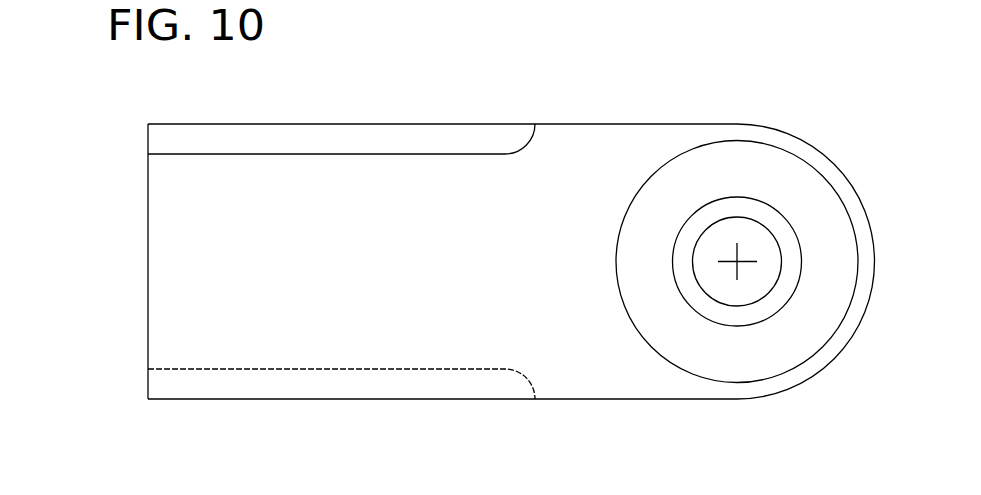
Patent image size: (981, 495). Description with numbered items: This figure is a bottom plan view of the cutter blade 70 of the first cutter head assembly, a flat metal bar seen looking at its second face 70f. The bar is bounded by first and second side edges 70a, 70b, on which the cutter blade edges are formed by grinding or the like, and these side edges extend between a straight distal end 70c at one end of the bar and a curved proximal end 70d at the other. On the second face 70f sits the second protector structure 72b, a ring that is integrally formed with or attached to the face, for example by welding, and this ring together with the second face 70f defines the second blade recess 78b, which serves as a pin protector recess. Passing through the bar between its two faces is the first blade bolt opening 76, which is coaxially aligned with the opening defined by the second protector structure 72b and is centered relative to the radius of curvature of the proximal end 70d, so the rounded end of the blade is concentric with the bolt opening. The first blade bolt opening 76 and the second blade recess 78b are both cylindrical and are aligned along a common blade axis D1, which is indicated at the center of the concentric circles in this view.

The cutter blade 70 is at (510, 255).
The first side edge 70a is at (584, 123).
The second side edge 70b is at (595, 399).
The straight distal end 70c is at (148, 222).
The curved proximal end 70d is at (870, 217).
The second face 70f is at (402, 256).
The second protector structure 72b is at (838, 252).
The first blade bolt opening 76 is at (762, 275).
The second blade recess 78b is at (743, 315).
The common blade axis D1 is at (737, 262).